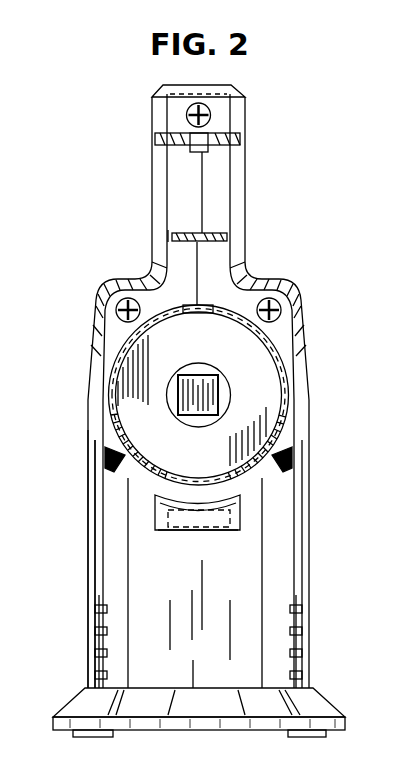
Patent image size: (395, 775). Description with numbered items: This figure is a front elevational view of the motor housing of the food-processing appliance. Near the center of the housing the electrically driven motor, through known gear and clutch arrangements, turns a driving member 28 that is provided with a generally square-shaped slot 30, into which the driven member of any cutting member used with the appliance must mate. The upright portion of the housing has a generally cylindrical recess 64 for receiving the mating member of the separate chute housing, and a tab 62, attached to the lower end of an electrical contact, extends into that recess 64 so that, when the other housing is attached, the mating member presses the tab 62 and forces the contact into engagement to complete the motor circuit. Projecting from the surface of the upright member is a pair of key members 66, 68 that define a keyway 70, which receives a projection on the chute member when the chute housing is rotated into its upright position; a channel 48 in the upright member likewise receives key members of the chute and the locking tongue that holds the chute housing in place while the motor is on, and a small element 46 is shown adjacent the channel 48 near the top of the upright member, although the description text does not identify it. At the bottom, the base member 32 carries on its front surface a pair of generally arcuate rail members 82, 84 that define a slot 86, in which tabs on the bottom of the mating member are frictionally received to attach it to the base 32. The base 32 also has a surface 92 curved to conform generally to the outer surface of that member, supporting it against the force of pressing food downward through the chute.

The driving member 28 is at (230, 398).
The square-shaped slot 30 is at (219, 385).
The base member 32 is at (104, 536).
The latch 46 is at (208, 146).
The channel 48 is at (190, 141).
The tab 62 is at (279, 332).
The cylindrical recess 64 is at (142, 382).
The key member 66 is at (227, 239).
The key member 68 is at (170, 234).
The keyway 70 is at (203, 232).
The arcuate rail member 82 is at (198, 530).
The arcuate rail member 84 is at (240, 497).
The slot 86 is at (238, 511).
The curved surface 92 is at (108, 463).